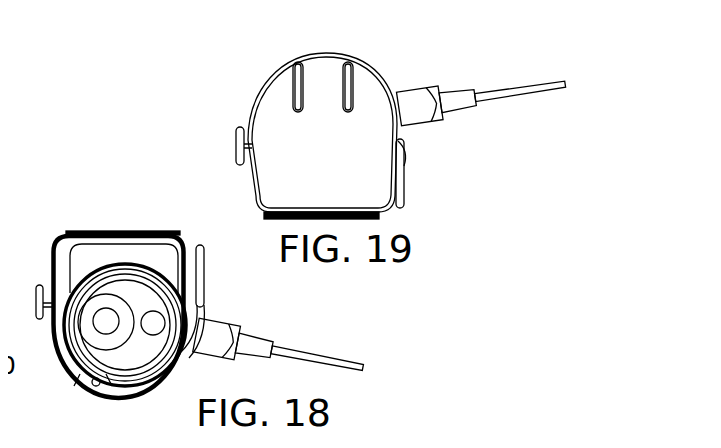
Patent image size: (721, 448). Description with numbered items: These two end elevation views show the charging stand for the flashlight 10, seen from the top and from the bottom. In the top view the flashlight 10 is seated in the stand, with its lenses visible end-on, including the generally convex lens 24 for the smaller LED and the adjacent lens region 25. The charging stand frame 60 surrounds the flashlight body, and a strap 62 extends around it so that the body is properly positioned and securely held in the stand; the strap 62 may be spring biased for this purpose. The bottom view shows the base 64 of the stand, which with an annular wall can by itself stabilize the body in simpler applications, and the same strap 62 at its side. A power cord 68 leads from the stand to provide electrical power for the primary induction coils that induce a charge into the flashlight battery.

In FIG. 18, the flashlight 10 is at (74, 268).
In FIG. 18, the convex lens 24 is at (145, 322).
In FIG. 18, the light source aperture 25 is at (93, 317).
In FIG. 18, the charging stand frame 60 is at (118, 224).
In FIG. 18, the strap 62 is at (196, 299).
In FIG. 19, the strap 62 is at (397, 168).
In FIG. 19, the base 64 is at (255, 164).
In FIG. 18, the power cord 68 is at (246, 335).
In FIG. 19, the power cord 68 is at (482, 96).